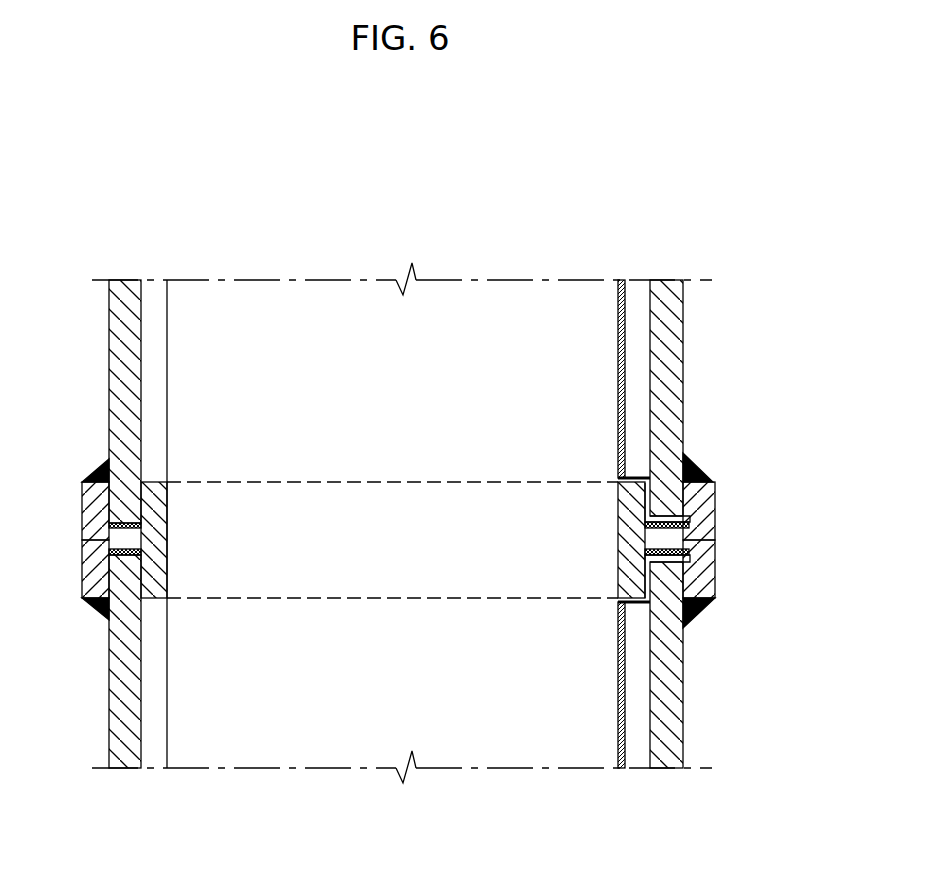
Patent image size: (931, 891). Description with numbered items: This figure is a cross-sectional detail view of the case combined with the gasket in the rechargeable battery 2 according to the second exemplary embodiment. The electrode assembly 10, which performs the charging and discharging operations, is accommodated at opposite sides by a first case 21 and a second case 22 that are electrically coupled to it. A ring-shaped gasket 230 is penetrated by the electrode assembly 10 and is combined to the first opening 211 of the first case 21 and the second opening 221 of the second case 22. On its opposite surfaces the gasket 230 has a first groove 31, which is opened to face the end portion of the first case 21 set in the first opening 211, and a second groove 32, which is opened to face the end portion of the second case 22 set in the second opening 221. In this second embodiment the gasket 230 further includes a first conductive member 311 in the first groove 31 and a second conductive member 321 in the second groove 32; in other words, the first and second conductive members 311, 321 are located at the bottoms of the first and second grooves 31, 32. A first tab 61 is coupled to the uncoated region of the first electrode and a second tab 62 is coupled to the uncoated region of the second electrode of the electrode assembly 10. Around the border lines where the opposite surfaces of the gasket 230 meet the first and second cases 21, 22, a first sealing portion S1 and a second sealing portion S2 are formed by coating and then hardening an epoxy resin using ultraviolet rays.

The rechargeable battery 2 is at (412, 183).
The electrode assembly 10 is at (416, 704).
The second case 22 is at (109, 346).
The first case 21 is at (109, 697).
The second opening 221 is at (138, 539).
The first opening 211 is at (115, 537).
The second groove 32 is at (112, 521).
The first groove 31 is at (113, 559).
The second tab 62 is at (622, 349).
The first tab 61 is at (624, 678).
The gasket 230 is at (715, 536).
The second conductive member 321 is at (698, 525).
The first conductive member 311 is at (692, 551).
The second sealing portion S2 is at (700, 457).
The first sealing portion S1 is at (700, 618).